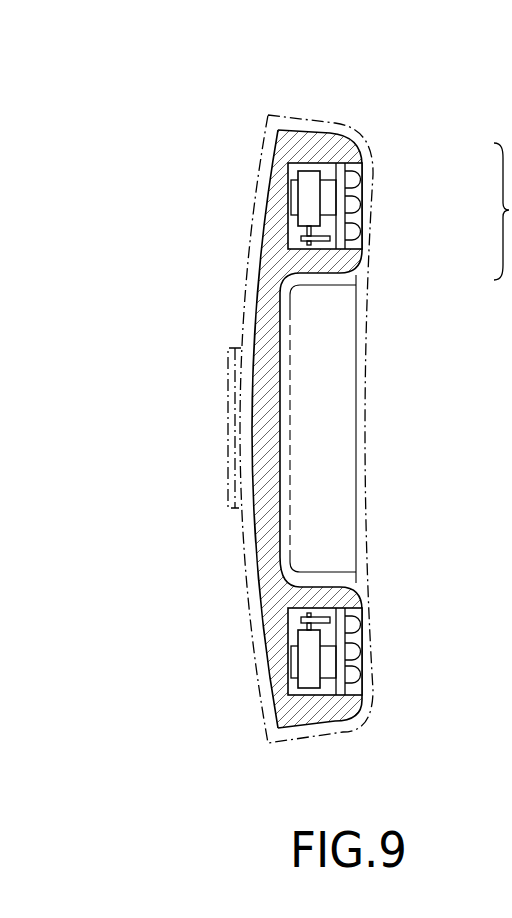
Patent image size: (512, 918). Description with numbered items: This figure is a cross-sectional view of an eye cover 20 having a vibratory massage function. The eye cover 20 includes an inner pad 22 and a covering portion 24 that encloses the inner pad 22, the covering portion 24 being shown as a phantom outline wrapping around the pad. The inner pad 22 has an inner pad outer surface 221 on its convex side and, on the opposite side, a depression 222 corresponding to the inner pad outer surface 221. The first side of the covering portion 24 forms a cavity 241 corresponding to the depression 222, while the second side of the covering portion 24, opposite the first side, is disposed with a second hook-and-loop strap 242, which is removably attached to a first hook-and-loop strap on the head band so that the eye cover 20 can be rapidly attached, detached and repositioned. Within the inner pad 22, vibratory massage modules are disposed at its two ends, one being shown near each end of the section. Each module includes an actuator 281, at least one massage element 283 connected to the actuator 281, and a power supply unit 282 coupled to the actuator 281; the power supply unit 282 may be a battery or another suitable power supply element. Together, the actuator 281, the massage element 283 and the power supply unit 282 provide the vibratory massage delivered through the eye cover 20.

The eye cover 20 is at (378, 55).
The inner pad 22 is at (256, 425).
The inner pad outer surface 221 is at (252, 415).
The depression 222 is at (277, 408).
The covering portion 24 is at (304, 429).
The cavity 241 is at (358, 490).
The second hook-and-loop strap 242 is at (228, 470).
The actuator 281 is at (311, 190).
The power supply unit 282 is at (341, 191).
The massage element 283 is at (355, 235).